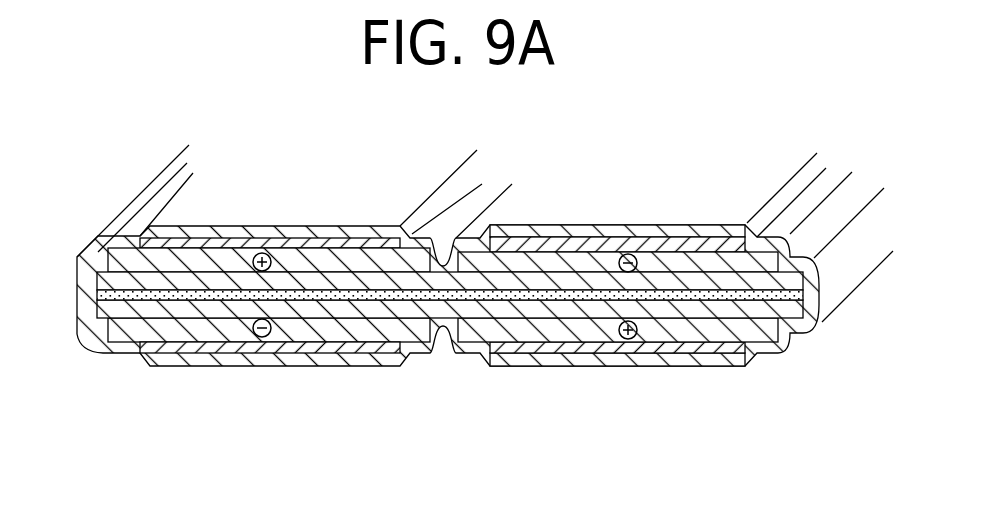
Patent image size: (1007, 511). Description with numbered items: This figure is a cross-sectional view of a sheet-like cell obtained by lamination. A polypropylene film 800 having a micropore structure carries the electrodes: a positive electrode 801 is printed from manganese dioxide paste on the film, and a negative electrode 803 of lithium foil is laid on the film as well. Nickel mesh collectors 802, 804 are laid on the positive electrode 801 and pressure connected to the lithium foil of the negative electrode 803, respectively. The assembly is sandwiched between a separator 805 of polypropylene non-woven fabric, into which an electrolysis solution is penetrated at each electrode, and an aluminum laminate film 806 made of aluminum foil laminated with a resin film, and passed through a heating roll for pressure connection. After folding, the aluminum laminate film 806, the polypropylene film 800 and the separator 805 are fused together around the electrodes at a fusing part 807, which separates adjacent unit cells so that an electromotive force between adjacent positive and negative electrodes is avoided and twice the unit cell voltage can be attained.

The polypropylene film 800 is at (375, 282).
The positive electrode 801 is at (228, 260).
The collector 802 is at (315, 243).
The negative electrode 803 is at (565, 260).
The collector 804 is at (708, 246).
The separator 805 is at (192, 297).
The aluminum laminate film 806 is at (642, 231).
The fusing part 807 is at (86, 340).